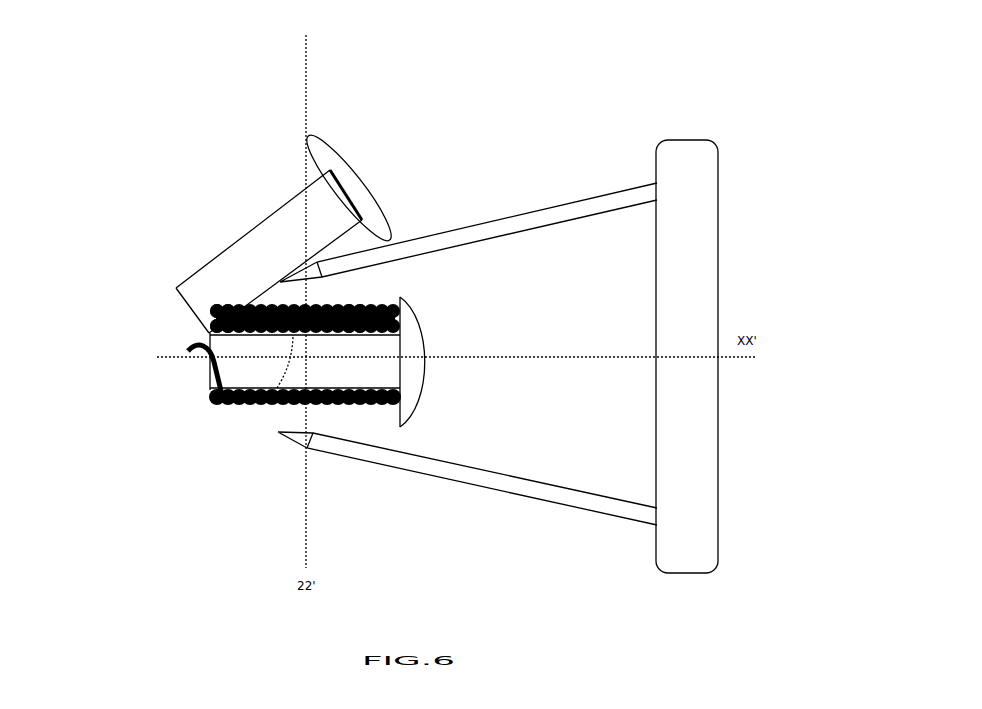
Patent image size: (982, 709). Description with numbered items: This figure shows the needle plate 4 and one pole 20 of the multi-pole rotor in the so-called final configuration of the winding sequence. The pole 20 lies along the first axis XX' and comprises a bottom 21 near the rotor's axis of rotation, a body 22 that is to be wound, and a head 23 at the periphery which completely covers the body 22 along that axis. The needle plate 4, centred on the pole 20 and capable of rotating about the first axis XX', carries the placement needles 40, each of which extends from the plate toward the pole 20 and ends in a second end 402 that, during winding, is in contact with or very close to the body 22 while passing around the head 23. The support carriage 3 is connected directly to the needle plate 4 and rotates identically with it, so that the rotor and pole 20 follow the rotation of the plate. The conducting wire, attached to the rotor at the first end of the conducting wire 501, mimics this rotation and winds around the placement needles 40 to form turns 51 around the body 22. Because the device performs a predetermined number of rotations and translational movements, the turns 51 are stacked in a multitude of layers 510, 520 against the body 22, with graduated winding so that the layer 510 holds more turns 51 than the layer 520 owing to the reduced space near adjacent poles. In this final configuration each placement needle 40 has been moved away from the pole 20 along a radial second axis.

The support carriage 3 is at (282, 93).
The needle plate 4 is at (688, 139).
The pole 20 is at (200, 390).
The bottom 21 is at (212, 330).
The body 22 is at (235, 407).
The head 23 is at (409, 297).
The placement needle 40 is at (517, 210).
The turn 51 is at (275, 304).
The first end of the conducting wire 501 is at (187, 348).
The layer 510 is at (238, 303).
The layer 520 is at (352, 304).
The second end 402 is at (302, 280).